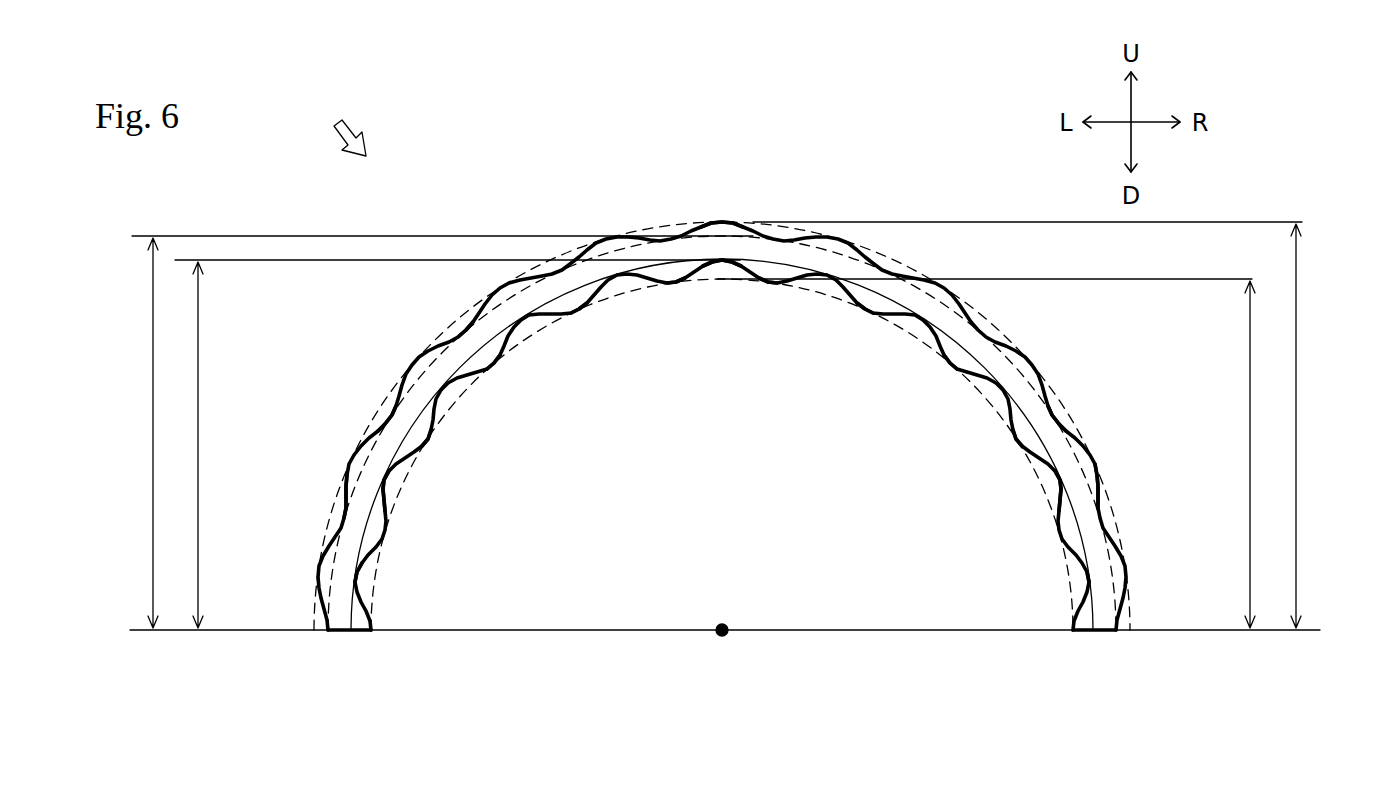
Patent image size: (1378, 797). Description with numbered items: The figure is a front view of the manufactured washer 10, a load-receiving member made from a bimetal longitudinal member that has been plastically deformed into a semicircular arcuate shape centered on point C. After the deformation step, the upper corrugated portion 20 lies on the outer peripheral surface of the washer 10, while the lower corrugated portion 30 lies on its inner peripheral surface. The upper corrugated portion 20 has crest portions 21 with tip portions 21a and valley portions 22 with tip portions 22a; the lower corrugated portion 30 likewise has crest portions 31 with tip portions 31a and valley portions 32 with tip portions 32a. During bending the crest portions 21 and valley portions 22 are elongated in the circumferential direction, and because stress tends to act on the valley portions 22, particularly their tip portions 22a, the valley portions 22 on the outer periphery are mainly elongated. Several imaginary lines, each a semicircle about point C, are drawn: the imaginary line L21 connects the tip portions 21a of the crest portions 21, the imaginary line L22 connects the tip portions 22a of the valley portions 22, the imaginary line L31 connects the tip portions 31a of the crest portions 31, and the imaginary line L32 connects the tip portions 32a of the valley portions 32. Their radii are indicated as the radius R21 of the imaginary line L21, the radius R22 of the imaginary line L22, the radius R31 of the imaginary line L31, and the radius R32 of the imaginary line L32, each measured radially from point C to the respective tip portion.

The washer 10 is at (335, 128).
The upper corrugated portion 20 is at (528, 235).
The crest portion 21 is at (503, 284).
The tip portion 21a is at (721, 221).
The valley portion 22 is at (462, 326).
The tip portion 22a is at (392, 415).
The lower corrugated portion 30 is at (747, 352).
The crest portion 31 is at (384, 545).
The tip portion 31a is at (388, 528).
The valley portion 32 is at (360, 590).
The tip portion 32a is at (364, 566).
The imaginary line L21 is at (657, 228).
The imaginary line L22 is at (360, 480).
The imaginary line L31 is at (1012, 445).
The imaginary line L32 is at (410, 456).
The radius R21 is at (1296, 291).
The radius R22 is at (150, 291).
The radius R31 is at (1246, 326).
The radius R32 is at (202, 326).
The point C is at (722, 637).